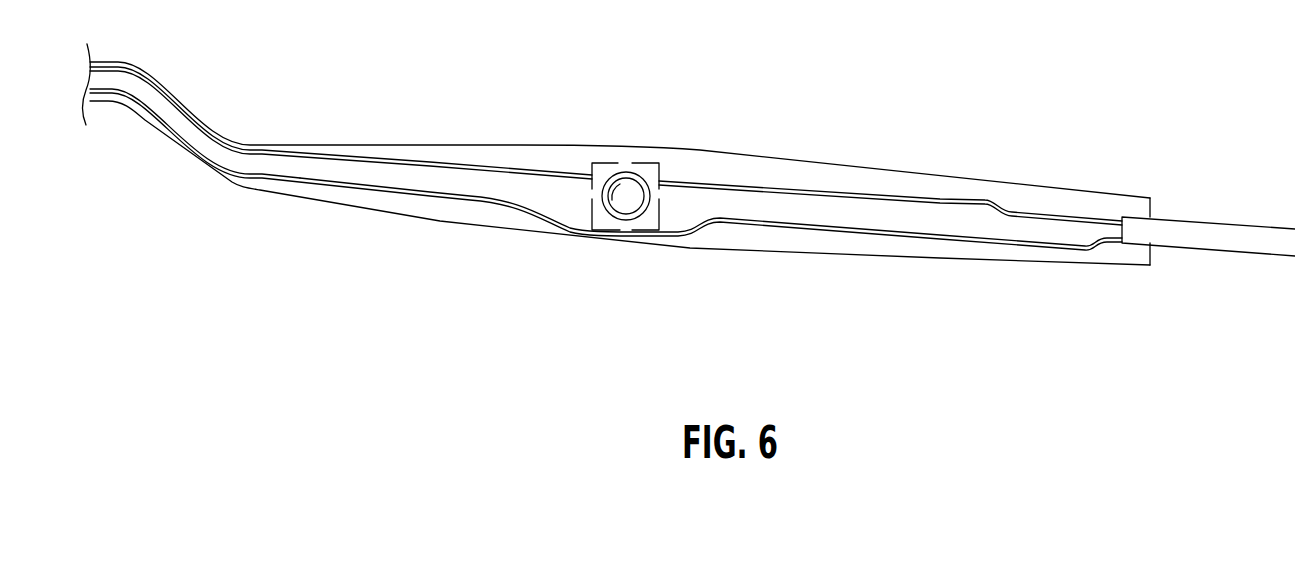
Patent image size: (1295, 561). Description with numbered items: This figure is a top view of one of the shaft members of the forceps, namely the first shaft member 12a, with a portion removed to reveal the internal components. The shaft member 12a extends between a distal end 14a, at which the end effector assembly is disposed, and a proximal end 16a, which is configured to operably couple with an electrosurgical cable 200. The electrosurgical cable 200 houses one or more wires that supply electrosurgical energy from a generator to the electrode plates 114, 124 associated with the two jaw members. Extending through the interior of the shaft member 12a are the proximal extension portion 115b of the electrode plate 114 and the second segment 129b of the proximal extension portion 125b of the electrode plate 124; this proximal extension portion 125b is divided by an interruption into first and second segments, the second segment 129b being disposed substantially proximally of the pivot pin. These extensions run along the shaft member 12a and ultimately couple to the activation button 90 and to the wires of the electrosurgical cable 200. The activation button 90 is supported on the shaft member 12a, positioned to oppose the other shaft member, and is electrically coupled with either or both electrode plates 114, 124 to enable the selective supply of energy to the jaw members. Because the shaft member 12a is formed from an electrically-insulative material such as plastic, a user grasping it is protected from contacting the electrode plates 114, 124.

The first shaft member 12a is at (771, 145).
The distal end 14a is at (103, 103).
The proximal end 16a is at (1140, 197).
The activation button 90 is at (622, 186).
The electrode plate 114 is at (290, 150).
The proximal extension portion 115b is at (428, 162).
The electrode plate 124 is at (248, 177).
The proximal extension portion 125b is at (423, 193).
The second segment 129b is at (363, 188).
The electrosurgical cable 200 is at (1197, 243).